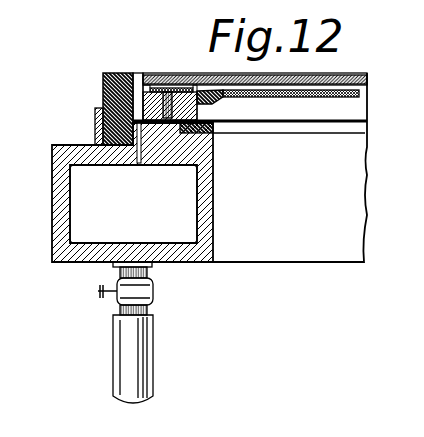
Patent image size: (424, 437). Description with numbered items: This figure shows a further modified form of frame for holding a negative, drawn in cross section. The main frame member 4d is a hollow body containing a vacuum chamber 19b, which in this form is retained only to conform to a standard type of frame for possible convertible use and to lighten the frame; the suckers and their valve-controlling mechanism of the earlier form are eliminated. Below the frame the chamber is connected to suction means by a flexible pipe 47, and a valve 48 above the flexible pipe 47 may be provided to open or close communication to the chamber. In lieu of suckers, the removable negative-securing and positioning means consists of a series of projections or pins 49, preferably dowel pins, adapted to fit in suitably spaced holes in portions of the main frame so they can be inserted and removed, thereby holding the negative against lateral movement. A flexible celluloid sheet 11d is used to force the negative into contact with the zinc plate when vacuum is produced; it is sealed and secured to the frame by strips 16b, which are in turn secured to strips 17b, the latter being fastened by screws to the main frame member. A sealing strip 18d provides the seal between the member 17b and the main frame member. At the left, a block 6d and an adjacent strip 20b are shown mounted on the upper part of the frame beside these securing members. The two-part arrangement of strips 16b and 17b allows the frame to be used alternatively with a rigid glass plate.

The base 4d is at (58, 193).
The block 6d is at (103, 74).
The flexible celluloid sheet 11d is at (322, 92).
The strips 16b is at (192, 100).
The strips 17b is at (205, 112).
The sealing strip 18d is at (212, 142).
The vacuum chamber 19b is at (133, 204).
The block 20b is at (96, 111).
The flexible pipe 47 is at (123, 350).
The valve 48 is at (128, 288).
The pins 49 is at (160, 112).